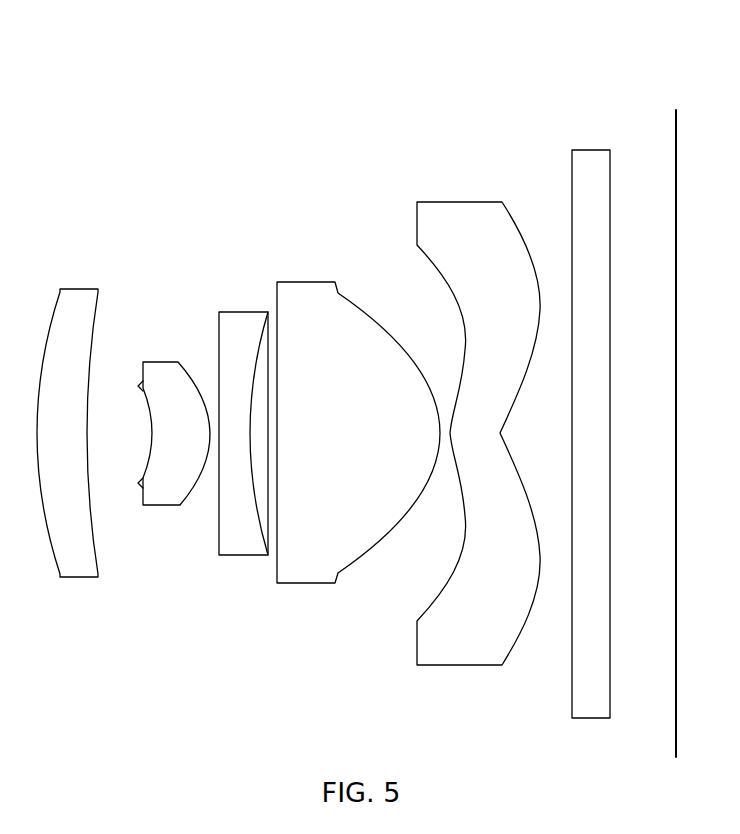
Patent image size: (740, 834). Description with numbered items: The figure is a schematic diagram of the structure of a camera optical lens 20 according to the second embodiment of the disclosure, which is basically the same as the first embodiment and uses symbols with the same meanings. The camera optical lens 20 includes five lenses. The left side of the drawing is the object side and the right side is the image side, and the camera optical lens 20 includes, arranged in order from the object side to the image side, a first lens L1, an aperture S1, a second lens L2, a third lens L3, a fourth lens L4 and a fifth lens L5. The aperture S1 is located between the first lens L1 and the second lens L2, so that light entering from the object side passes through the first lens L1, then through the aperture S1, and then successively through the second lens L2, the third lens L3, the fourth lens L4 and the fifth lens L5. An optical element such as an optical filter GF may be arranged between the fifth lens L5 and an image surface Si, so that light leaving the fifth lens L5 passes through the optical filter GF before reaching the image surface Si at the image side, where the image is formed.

The camera optical lens 20 is at (367, 50).
The first lens L1 is at (67, 421).
The aperture S1 is at (130, 423).
The second lens L2 is at (176, 422).
The third lens L3 is at (243, 422).
The fourth lens L4 is at (358, 421).
The fifth lens L5 is at (478, 423).
The optical filter GF is at (591, 422).
The image surface Si is at (676, 420).